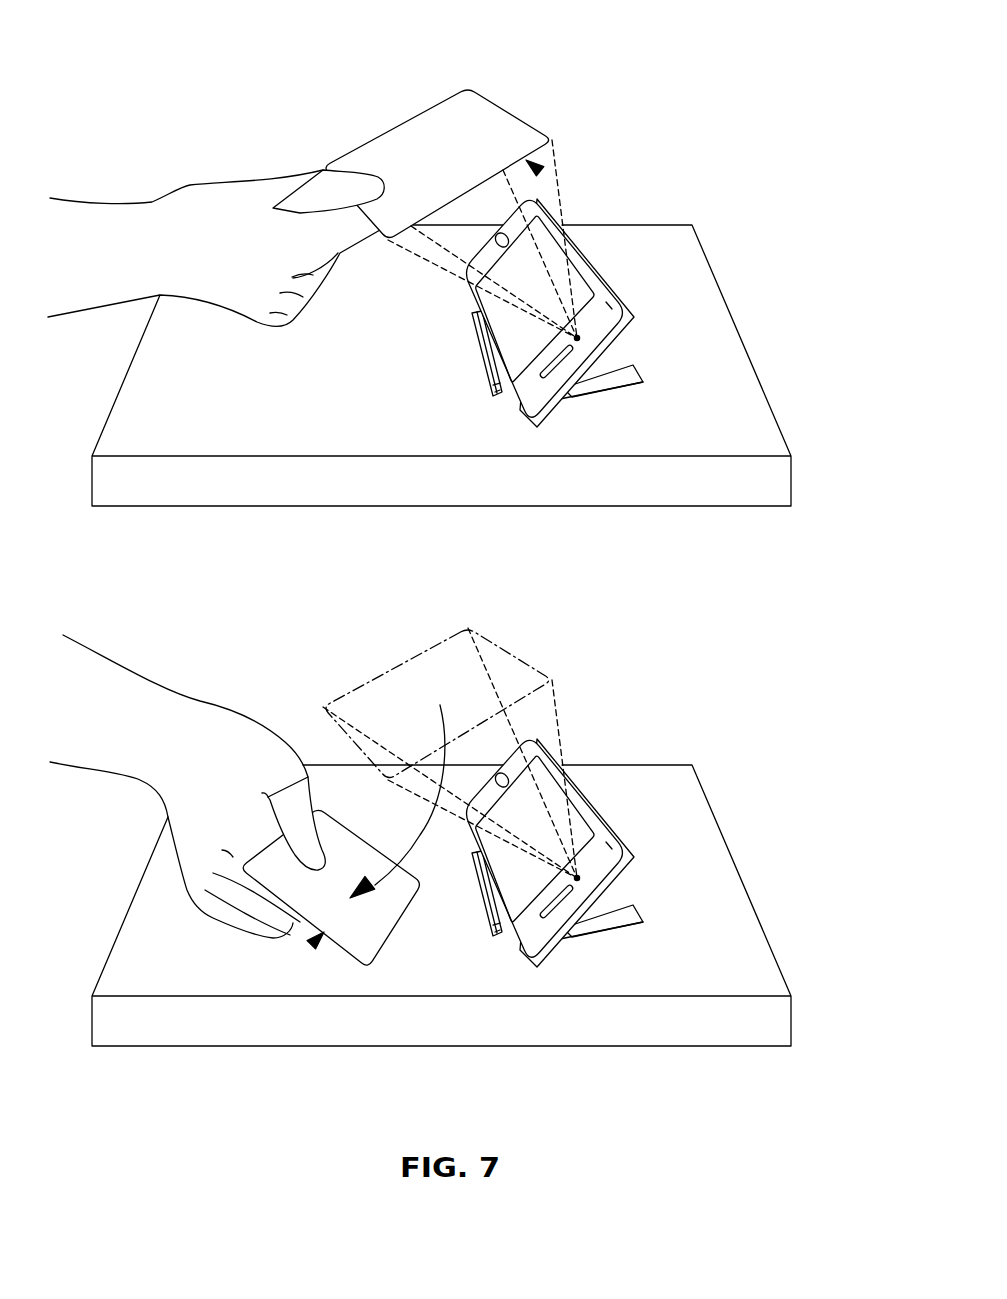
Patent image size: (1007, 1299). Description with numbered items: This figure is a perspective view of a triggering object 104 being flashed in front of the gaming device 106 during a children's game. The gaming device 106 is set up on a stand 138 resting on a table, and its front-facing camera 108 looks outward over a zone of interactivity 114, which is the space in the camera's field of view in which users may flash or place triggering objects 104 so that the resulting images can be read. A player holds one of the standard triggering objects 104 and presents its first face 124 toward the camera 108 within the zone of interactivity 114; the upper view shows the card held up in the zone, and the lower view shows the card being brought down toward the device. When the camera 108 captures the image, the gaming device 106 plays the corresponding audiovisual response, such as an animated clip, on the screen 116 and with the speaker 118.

The triggering object 104 is at (482, 128).
The gaming device 106 is at (607, 305).
The camera 108 is at (603, 357).
The zone of interactivity 114 is at (420, 260).
The screen 116 is at (512, 340).
The speaker 118 is at (577, 342).
The first face 124 is at (536, 166).
The stand 138 is at (632, 376).